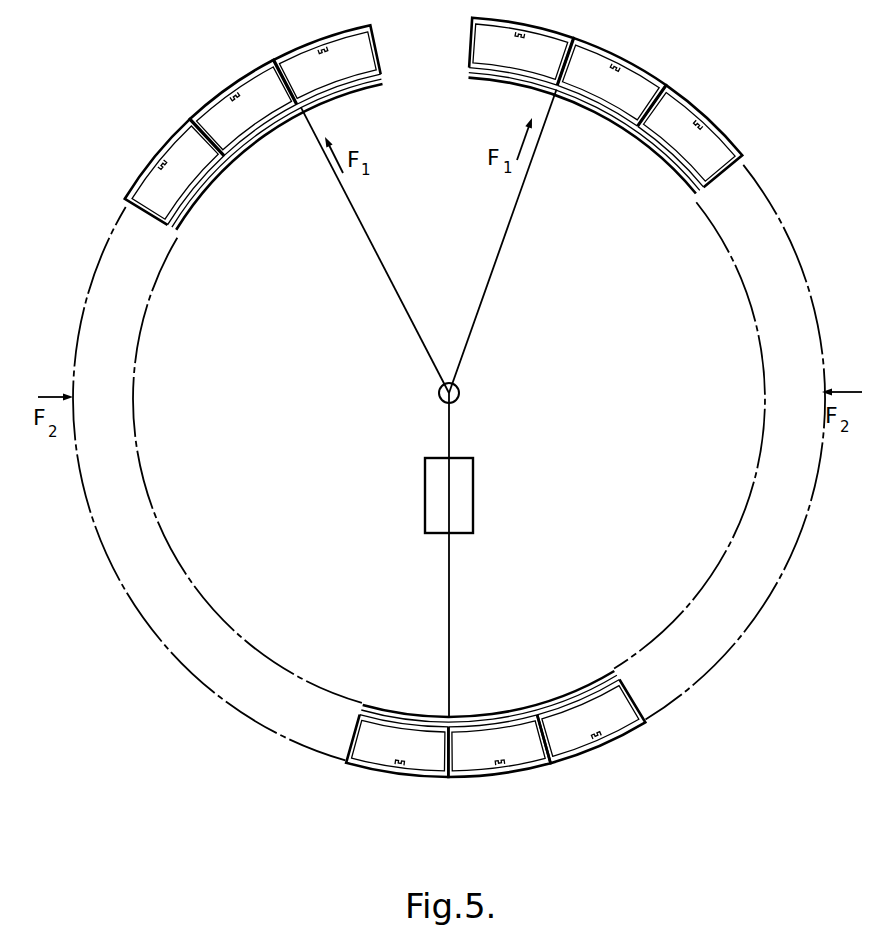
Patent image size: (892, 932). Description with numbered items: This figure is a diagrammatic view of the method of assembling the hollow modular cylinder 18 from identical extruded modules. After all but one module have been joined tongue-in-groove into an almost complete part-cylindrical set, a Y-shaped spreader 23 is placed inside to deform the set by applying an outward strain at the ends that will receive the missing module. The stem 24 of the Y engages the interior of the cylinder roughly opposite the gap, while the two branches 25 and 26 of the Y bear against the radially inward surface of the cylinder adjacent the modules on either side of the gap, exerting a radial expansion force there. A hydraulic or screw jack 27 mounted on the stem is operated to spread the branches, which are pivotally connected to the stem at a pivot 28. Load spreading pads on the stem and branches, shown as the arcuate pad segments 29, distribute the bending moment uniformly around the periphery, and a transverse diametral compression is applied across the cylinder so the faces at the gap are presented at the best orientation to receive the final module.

The hollow cylinder 18 is at (777, 570).
The spreader 23 is at (429, 403).
The stem 24 is at (452, 618).
The branch 25 is at (347, 197).
The branch 26 is at (518, 197).
The hydraulic or screw jack 27 is at (474, 497).
The pivot 28 is at (462, 395).
The segment groups 29 is at (240, 153).